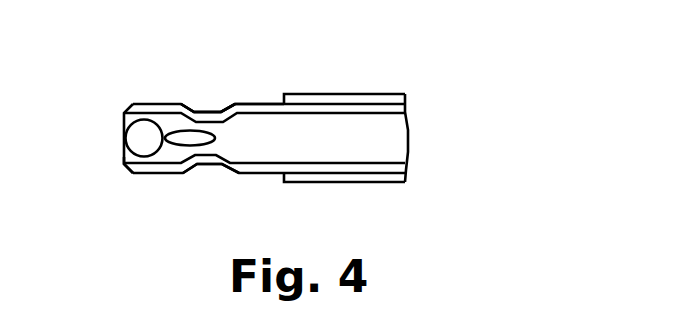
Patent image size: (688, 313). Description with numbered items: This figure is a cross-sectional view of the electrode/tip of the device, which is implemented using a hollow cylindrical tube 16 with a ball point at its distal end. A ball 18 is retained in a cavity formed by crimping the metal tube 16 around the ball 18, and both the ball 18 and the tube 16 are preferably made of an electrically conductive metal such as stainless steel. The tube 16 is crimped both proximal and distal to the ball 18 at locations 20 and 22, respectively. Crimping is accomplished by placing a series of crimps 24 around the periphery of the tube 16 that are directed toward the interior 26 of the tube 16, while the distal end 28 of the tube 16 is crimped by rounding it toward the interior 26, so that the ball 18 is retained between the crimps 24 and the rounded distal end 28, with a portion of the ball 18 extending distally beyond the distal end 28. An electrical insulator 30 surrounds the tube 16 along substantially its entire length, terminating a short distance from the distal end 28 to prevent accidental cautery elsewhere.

The hollow cylindrical tube 16 is at (266, 101).
The ball 18 is at (153, 132).
The proximal crimp location 20 is at (227, 62).
The distal crimp location 22 is at (113, 79).
The crimps 24 is at (207, 111).
The interior of tube 26 is at (310, 127).
The distal end of tube 28 is at (126, 166).
The electrical insulator 30 is at (355, 95).